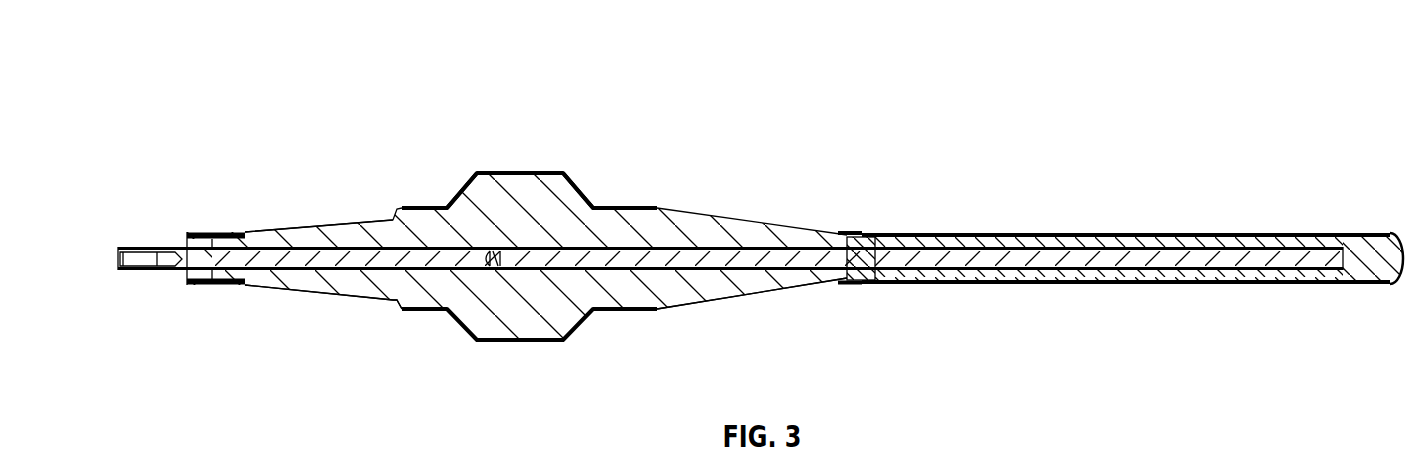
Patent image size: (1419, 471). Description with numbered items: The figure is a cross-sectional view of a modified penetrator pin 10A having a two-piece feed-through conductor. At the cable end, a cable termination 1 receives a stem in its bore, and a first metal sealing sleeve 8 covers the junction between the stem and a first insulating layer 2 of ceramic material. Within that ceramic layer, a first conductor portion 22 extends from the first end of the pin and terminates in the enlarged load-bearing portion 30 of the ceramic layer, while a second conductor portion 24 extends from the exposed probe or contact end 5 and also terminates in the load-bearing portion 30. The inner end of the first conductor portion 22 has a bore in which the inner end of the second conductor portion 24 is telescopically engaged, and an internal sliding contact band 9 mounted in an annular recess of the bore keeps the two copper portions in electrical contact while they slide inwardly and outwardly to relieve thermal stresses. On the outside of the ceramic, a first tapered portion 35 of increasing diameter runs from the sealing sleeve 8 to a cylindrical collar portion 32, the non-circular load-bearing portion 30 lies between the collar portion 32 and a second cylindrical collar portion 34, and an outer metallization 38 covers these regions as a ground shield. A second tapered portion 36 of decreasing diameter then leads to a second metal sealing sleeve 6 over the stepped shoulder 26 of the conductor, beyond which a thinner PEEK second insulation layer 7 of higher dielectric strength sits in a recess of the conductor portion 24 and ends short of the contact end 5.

The penetrator pin 10A is at (1291, 104).
The cable termination 1 is at (163, 249).
The first metal sealing sleeve 8 is at (207, 287).
The first conductor portion 22 is at (313, 260).
The first tapered portion 35 is at (328, 222).
The first insulating layer 2 is at (430, 300).
The cylindrical collar portion 32 is at (418, 197).
The enlarged load-bearing portion 30 is at (501, 168).
The outer coating or metallization 38 is at (547, 172).
The cylindrical collar portion 34 is at (620, 200).
The internal sliding contact band 9 is at (520, 270).
The second tapered portion 36 is at (720, 298).
The second conductor portion 24 is at (786, 260).
The stepped shoulder 26 is at (862, 240).
The second metal sealing sleeve 6 is at (850, 286).
The second insulation layer 7 is at (1140, 235).
The probe or contact end 5 is at (1373, 250).